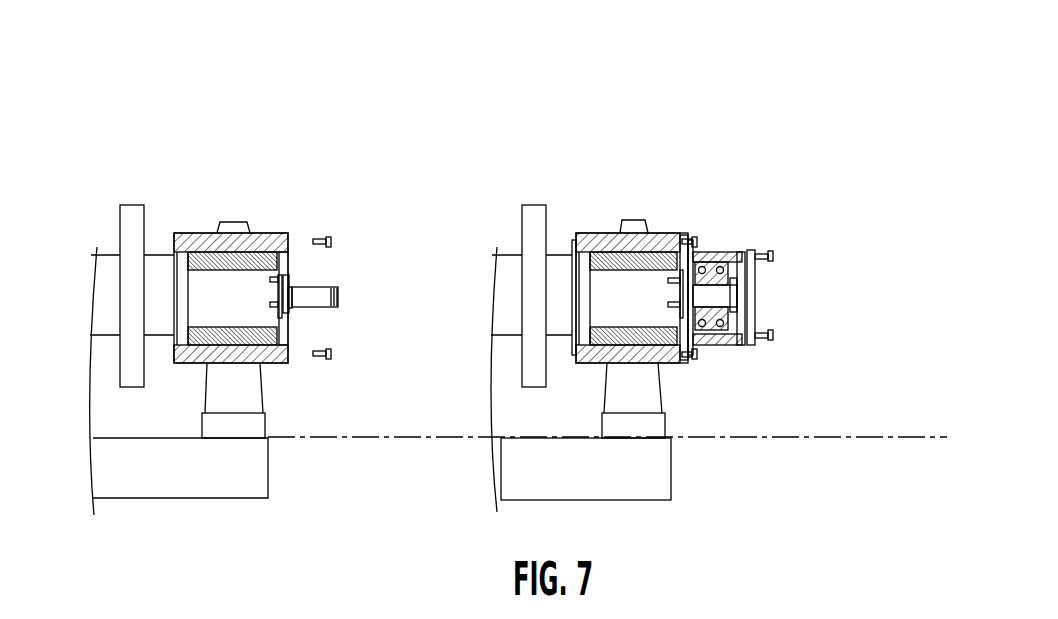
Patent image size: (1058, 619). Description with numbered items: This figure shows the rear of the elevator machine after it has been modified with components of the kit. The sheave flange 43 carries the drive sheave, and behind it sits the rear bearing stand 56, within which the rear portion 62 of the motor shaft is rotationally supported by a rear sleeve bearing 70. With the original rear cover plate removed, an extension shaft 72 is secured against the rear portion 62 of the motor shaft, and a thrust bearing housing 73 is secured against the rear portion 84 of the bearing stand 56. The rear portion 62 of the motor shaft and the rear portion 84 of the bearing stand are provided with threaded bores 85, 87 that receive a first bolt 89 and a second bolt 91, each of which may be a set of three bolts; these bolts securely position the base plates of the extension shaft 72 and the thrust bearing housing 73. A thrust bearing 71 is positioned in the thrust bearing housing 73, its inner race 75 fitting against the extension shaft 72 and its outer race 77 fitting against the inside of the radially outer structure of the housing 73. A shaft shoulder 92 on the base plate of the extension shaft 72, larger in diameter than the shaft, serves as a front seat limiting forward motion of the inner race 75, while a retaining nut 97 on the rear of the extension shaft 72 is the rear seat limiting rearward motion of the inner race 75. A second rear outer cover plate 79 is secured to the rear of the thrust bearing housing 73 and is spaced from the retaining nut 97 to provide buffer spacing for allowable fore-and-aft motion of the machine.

The sheave flange 43 is at (140, 204).
The rear bearing stand 56 is at (224, 181).
The rear portion of the motor shaft 62 is at (178, 258).
The rear sleeve bearing 70 is at (260, 233).
The extension shaft 72 is at (336, 277).
The rear portion of the bearing stand 84 is at (287, 231).
The threaded bore 85 is at (290, 318).
The threaded bore 87 is at (293, 240).
The first bolt 89 is at (332, 379).
The second bolt 91 is at (332, 356).
The shaft shoulder 92 is at (292, 280).
The thrust bearing 71 is at (790, 264).
The thrust bearing housing 73 is at (717, 252).
The inner race 75 is at (722, 253).
The outer race 77 is at (717, 342).
The second rear outer cover plate 79 is at (755, 287).
The retaining nut 97 is at (772, 249).